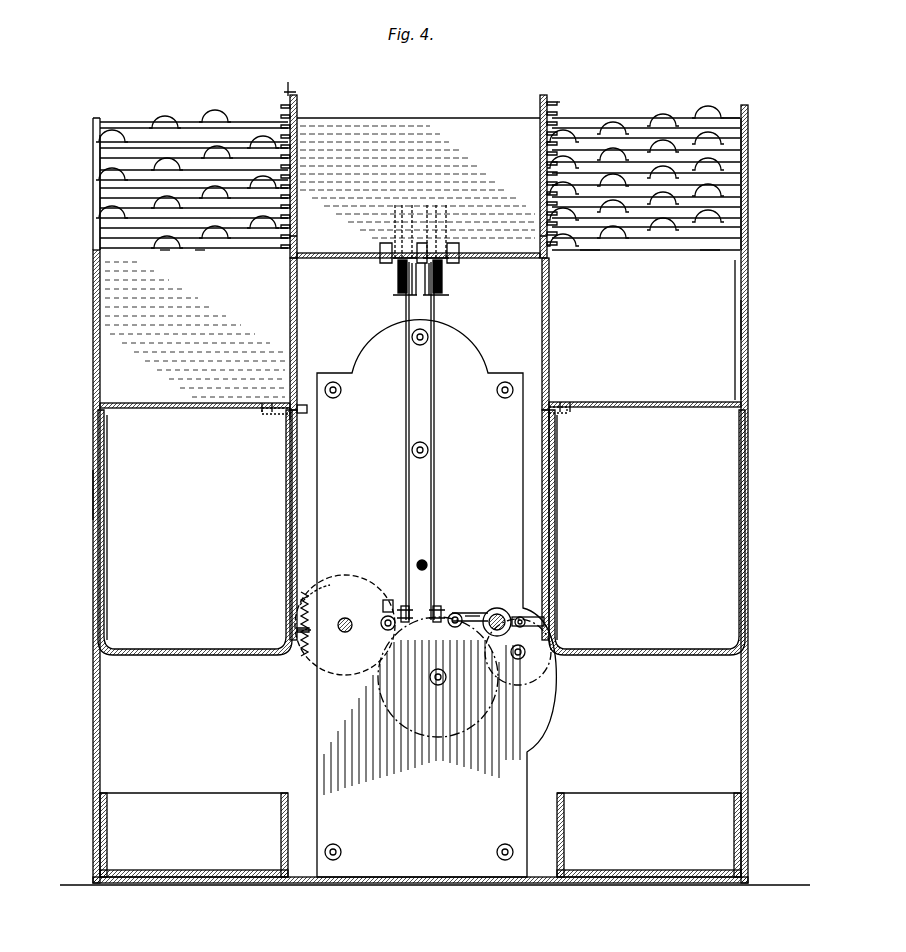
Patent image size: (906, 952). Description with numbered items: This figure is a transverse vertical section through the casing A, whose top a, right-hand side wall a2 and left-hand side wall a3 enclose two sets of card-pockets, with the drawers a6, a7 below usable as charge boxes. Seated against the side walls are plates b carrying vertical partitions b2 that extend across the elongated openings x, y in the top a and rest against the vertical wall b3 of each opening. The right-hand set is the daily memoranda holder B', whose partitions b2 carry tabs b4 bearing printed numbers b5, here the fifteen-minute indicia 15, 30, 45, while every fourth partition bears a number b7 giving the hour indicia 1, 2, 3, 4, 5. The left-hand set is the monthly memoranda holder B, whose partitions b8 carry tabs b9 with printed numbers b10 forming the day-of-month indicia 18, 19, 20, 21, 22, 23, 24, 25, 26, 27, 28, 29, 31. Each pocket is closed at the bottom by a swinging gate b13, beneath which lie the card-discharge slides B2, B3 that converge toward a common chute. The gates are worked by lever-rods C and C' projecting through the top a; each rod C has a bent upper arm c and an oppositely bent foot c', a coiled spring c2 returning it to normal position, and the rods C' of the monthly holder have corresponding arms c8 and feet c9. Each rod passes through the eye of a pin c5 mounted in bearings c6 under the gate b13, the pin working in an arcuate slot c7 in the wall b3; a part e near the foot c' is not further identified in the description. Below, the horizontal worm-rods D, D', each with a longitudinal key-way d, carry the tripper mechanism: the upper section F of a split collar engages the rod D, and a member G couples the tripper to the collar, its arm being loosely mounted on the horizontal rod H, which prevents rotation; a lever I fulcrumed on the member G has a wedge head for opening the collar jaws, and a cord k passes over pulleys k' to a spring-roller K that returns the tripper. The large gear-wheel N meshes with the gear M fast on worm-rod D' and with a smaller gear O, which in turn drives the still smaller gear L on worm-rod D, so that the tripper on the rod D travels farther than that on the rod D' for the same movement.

The casing A is at (748, 680).
The top a is at (418, 178).
The right-hand side wall a2 is at (748, 382).
The left-hand side wall a3 is at (93, 496).
The drawer a6 is at (194, 835).
The drawer a7 is at (649, 835).
The monthly memoranda holder B is at (367, 179).
The daily memoranda holder B' is at (664, 176).
The card-discharge slide B2 is at (643, 652).
The card-discharge slide B3 is at (192, 652).
The plate b is at (748, 325).
The vertical partition b2 is at (716, 330).
The vertical wall b3 is at (297, 347).
The tab b4 is at (710, 252).
The printed number b5 is at (718, 108).
The number b7 is at (590, 252).
The partition b8 is at (195, 329).
The tab b9 is at (200, 252).
The printed number b10 is at (165, 252).
The swinging gate b13 is at (165, 408).
The lever-rod C is at (532, 174).
The lever-rod C' is at (304, 174).
The arm c is at (439, 146).
The foot c' is at (435, 437).
The coiled spring c2 is at (297, 238).
The pin c5 is at (267, 403).
The bearing c6 is at (268, 414).
The arcuate slot c7 is at (292, 415).
The arm c8 is at (288, 81).
The foot c9 is at (310, 640).
The worm-rod D is at (492, 594).
The worm-rod D' is at (342, 643).
The key-way d is at (350, 631).
The bracket e is at (535, 617).
The upper collar section F is at (522, 616).
The coupling member G is at (500, 608).
The horizontal rod H is at (449, 292).
The lever I is at (470, 625).
The spring-roller K is at (393, 284).
The cord k is at (418, 441).
The pulley k' is at (424, 595).
The gear L is at (475, 613).
The gear M is at (300, 598).
The gear-wheel N is at (380, 683).
The gear O is at (525, 672).
The elongated opening x is at (748, 170).
The elongated opening y is at (93, 160).
The key 1 is at (563, 239).
The key 2 is at (563, 213).
The key 3 is at (563, 187).
The main-spring barrel 4 is at (563, 161).
The shaft 5 is at (563, 135).
The gear 15 is at (613, 179).
The key 30 is at (414, 171).
The key 45 is at (708, 163).
The gear 18 is at (167, 241).
The gear 19 is at (215, 231).
The toothed wheel 20 is at (263, 221).
The long tooth 21 is at (112, 211).
The short tooth 22 is at (167, 201).
The key 23 is at (215, 191).
The key 24 is at (263, 181).
The key 25 is at (112, 173).
The key 26 is at (167, 163).
The key 27 is at (217, 151).
The key 28 is at (263, 141).
The key 29 is at (112, 135).
The key 31 is at (215, 115).